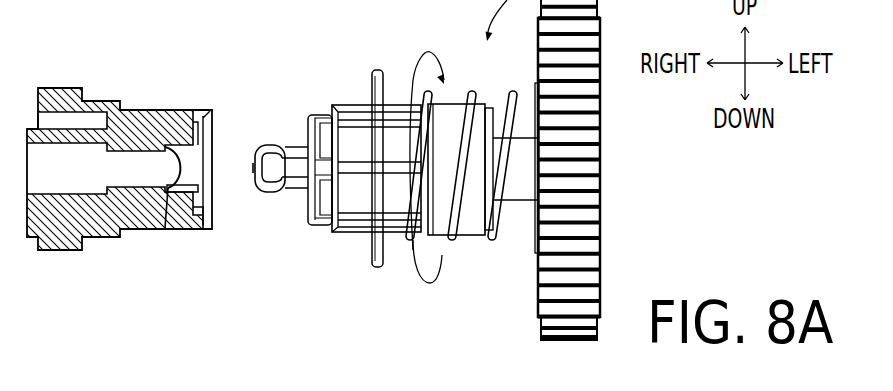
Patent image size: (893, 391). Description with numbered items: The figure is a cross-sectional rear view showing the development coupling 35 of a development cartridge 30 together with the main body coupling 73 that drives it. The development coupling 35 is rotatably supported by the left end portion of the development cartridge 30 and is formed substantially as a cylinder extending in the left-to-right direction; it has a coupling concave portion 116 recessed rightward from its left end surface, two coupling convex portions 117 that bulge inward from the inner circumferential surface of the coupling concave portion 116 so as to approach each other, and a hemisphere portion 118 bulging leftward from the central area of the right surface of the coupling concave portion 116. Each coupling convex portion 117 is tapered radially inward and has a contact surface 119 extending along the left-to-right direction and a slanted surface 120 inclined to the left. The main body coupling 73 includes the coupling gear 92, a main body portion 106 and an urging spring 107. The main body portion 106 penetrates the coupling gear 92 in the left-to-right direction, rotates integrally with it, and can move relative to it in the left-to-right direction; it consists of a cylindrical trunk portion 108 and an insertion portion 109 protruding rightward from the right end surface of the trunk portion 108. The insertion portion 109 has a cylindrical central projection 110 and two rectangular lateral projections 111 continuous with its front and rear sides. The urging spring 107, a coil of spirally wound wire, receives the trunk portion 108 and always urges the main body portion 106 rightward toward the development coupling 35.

The development coupling 35 is at (68, 72).
The development cartridge 30 is at (119, 169).
The coupling concave portion 116 is at (173, 142).
The coupling convex portions 117 is at (190, 138).
The hemisphere portion 118 is at (188, 183).
The contact surface 119 is at (196, 175).
The slanted surface 120 is at (200, 212).
The insertion portion 109 is at (320, 62).
The central projection 110 is at (267, 143).
The lateral projections 111 is at (276, 160).
The main body portion 106 is at (350, 236).
The trunk portion 108 is at (348, 106).
The urging spring 107 is at (488, 240).
The main body coupling 73 is at (515, 264).
The coupling gear 92 is at (583, 340).